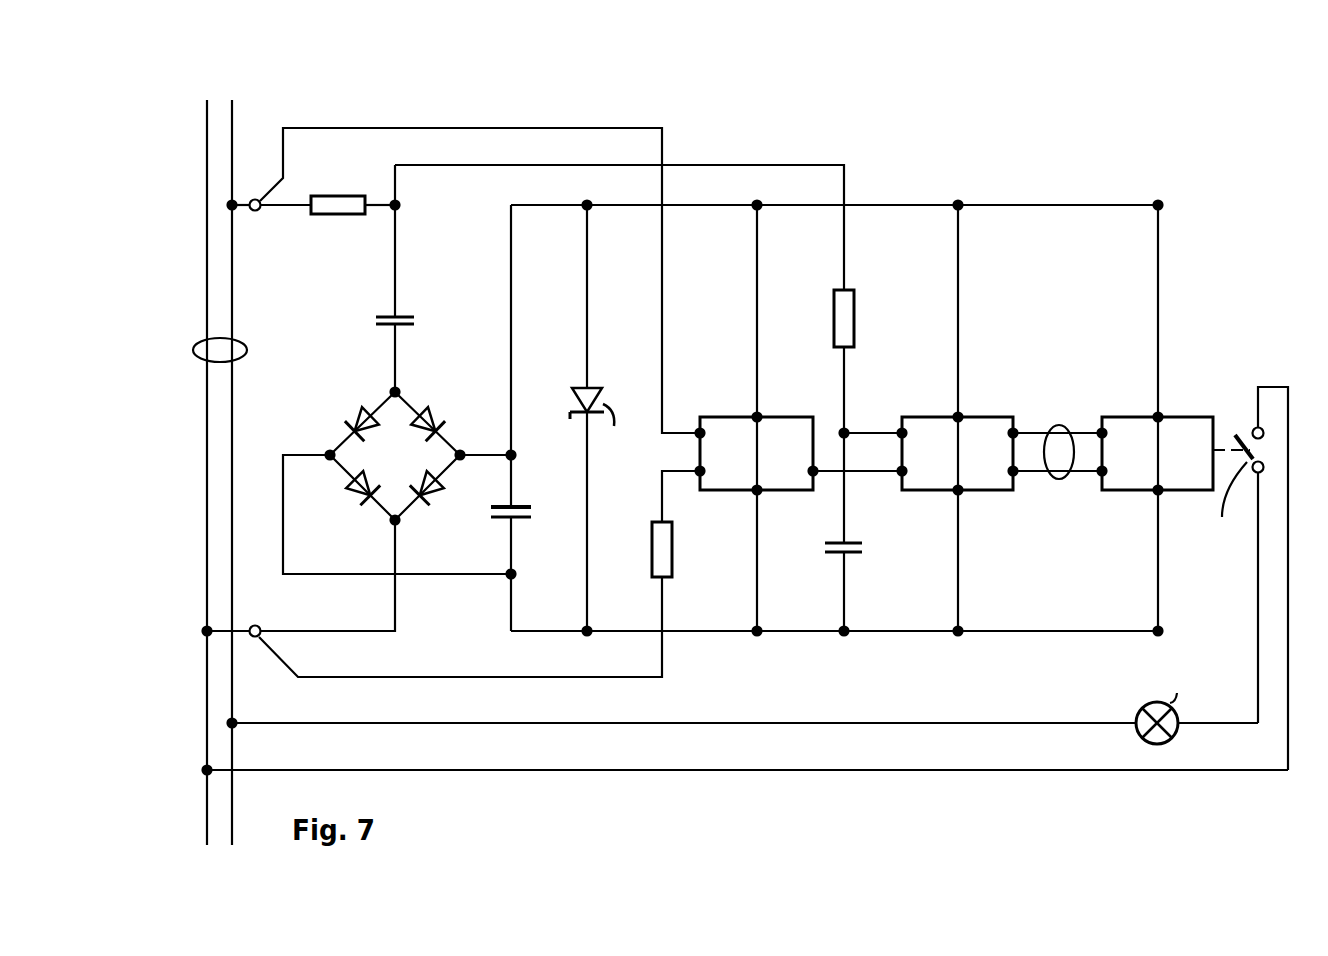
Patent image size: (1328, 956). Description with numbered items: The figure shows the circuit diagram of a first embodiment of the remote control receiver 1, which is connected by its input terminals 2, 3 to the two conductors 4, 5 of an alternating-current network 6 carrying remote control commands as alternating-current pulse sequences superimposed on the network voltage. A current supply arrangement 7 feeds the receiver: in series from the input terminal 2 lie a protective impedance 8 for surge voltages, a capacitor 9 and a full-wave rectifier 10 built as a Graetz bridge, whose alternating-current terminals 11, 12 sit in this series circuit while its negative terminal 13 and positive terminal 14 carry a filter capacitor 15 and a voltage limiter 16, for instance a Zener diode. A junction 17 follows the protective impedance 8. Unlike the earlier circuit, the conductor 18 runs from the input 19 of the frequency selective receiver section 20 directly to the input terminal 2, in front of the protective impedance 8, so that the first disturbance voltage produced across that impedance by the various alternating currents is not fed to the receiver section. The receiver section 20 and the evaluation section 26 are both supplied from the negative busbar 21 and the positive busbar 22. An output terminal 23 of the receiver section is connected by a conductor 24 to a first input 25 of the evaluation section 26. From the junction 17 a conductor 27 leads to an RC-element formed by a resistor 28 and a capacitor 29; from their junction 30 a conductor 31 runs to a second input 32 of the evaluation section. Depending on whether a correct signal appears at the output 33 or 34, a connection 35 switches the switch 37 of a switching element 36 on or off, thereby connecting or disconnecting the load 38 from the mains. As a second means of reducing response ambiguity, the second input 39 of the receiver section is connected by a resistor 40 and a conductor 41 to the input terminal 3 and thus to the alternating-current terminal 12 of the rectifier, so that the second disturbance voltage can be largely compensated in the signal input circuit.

The remote control receiver 1 is at (926, 148).
The input terminal 2 is at (254, 199).
The input terminal 3 is at (255, 626).
The conductor 4 is at (232, 256).
The conductor 5 is at (207, 297).
The alternating-current network 6 is at (246, 346).
The current supply arrangement 7 is at (436, 489).
The protective impedance 8 is at (350, 214).
The capacitor 9 is at (390, 315).
The full-wave rectifier 10 is at (393, 458).
The alternating-current terminal 11 is at (400, 391).
The alternating-current terminal 12 is at (392, 524).
The negative terminal 13 is at (465, 461).
The positive terminal 14 is at (327, 452).
The filter capacitor 15 is at (506, 524).
The voltage limiter 16 is at (573, 398).
The junction 17 is at (399, 204).
The conductor 18 is at (662, 316).
The input of the selective receiver section 19 is at (698, 431).
The frequency selective receiver section 20 is at (722, 417).
The negative busbar 21 is at (908, 207).
The positive busbar 22 is at (616, 630).
The output terminal 23 is at (813, 497).
The conductor 24 is at (857, 491).
The first input 25 is at (907, 497).
The evaluation section 26 is at (924, 417).
The conductor 27 is at (728, 162).
The resistor 28 is at (833, 316).
The capacitor 29 is at (838, 555).
The junction 30 is at (842, 431).
The conductor 31 is at (873, 431).
The second input 32 is at (899, 430).
The output 33 is at (1049, 497).
The output 34 is at (1015, 430).
The connection 35 is at (1060, 469).
The switching element 36 is at (1113, 417).
The switch 37 is at (1238, 427).
The current load 38 is at (1138, 731).
The second input of the selective receiver section 39 is at (698, 498).
The resistor 40 is at (653, 560).
The conductor 41 is at (448, 676).